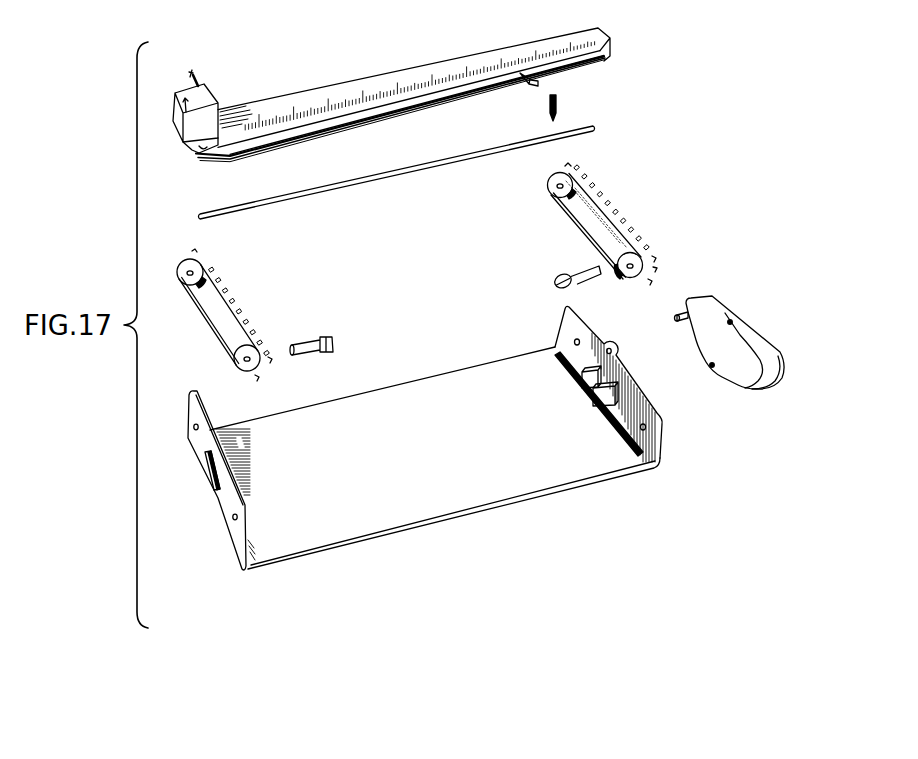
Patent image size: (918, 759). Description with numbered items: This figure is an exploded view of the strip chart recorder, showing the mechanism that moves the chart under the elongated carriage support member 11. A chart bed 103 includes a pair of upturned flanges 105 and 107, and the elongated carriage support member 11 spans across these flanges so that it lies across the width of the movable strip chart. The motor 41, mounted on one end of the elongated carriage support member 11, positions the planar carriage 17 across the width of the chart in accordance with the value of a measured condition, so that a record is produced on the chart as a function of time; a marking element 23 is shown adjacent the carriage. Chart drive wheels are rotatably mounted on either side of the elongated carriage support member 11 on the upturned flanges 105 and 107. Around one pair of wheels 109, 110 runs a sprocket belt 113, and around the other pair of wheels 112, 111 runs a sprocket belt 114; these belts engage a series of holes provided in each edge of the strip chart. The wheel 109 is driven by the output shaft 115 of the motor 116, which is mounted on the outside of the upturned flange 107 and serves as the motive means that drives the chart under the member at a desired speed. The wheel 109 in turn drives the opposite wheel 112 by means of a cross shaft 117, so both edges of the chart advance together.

The elongated carriage support member 11 is at (482, 52).
The motor 41 is at (207, 97).
The planar carriage 17 is at (530, 87).
The marking pencil 23 is at (559, 100).
The cross shaft 117 is at (413, 166).
The wheel 109 is at (554, 193).
The sprocket belt 113 is at (613, 205).
The wheel 110 is at (631, 278).
The wheel 112 is at (184, 283).
The sprocket belt 114 is at (238, 303).
The wheel 111 is at (243, 372).
The chart bed 103 is at (452, 376).
The upturned flange 107 is at (592, 332).
The upturned flange 105 is at (188, 409).
The output shaft 115 is at (681, 322).
The motor 116 is at (758, 338).